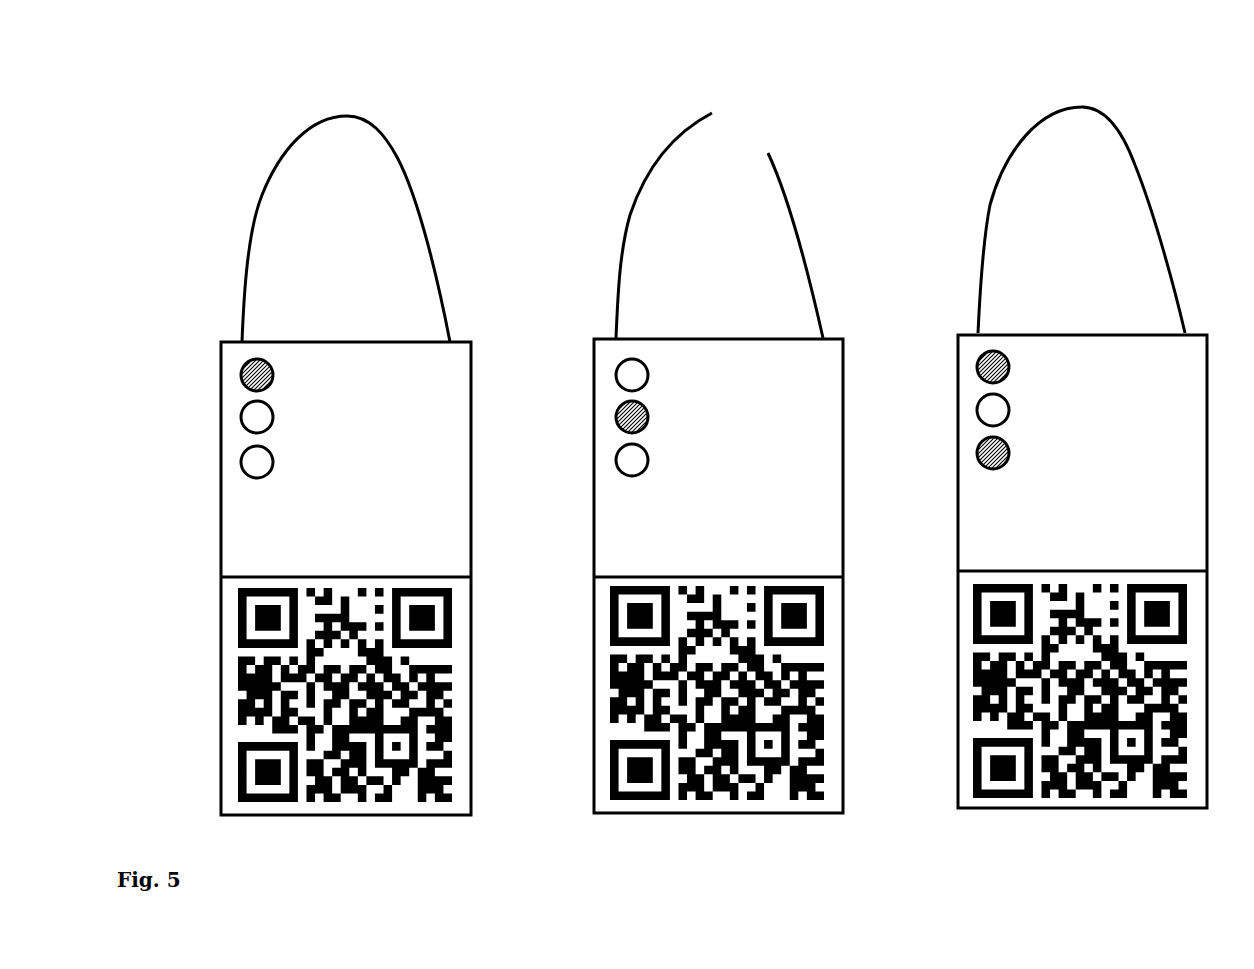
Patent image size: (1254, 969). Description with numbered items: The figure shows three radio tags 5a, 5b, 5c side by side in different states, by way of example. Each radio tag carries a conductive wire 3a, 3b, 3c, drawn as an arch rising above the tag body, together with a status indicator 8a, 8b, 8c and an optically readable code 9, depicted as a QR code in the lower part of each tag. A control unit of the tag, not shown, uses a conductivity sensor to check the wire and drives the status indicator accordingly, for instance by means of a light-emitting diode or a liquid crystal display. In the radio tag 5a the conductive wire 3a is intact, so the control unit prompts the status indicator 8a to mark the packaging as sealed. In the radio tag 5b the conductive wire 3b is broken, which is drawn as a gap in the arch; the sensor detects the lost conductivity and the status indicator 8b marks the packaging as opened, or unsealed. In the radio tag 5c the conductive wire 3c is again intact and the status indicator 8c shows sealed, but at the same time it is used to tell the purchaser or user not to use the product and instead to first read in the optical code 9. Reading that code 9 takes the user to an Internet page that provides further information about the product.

The conductive wire 3a is at (398, 163).
The conductive wire 3b is at (783, 168).
The conductive wire 3c is at (1165, 222).
The radio tag 5a is at (192, 322).
The radio tag 5b is at (564, 330).
The radio tag 5c is at (947, 313).
The status indicator 8a is at (210, 360).
The status indicator 8b is at (593, 363).
The status indicator 8c is at (957, 353).
The optically readable code 9 is at (240, 713).